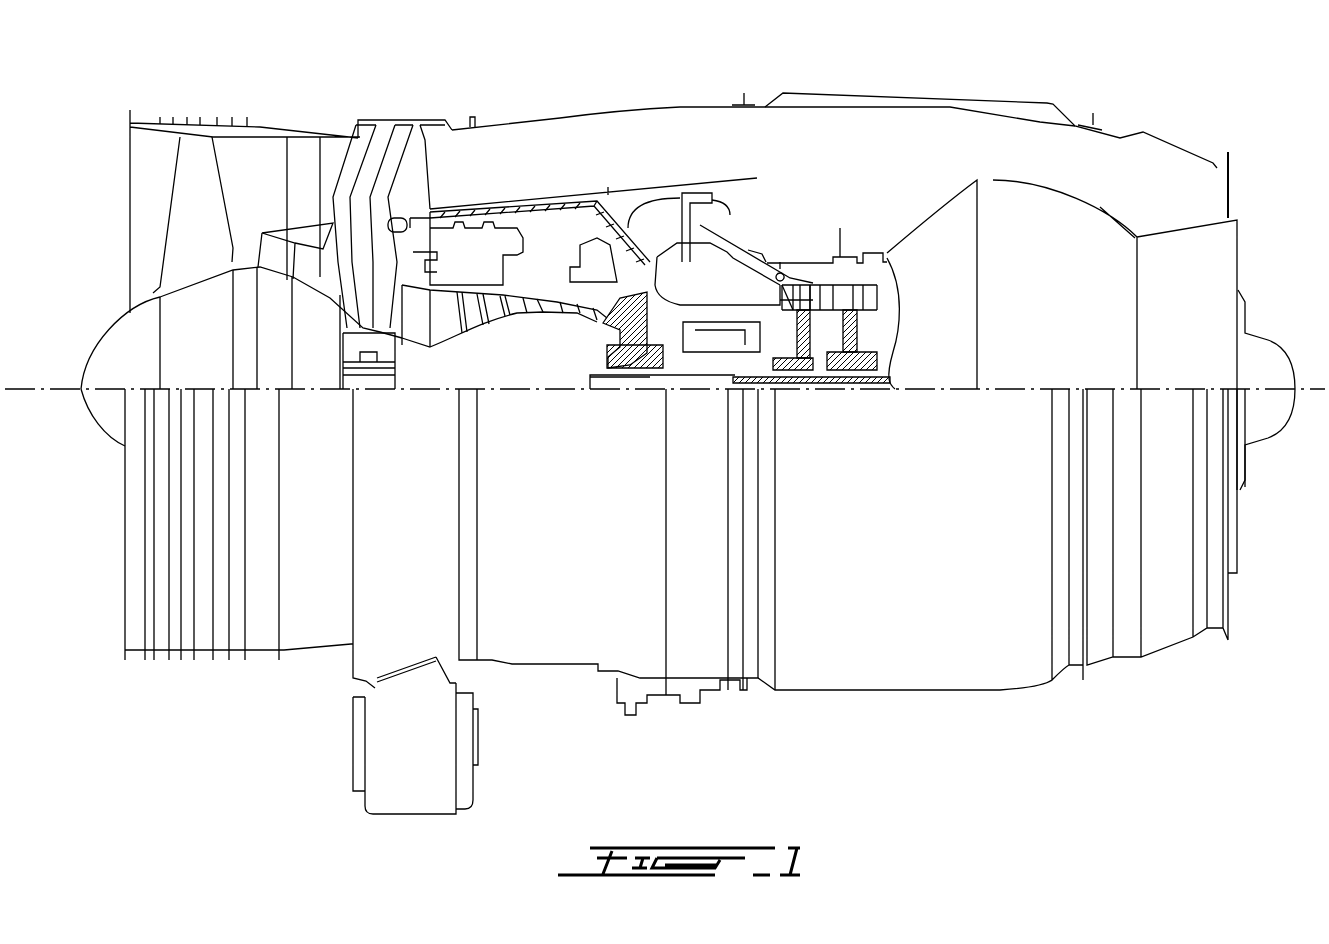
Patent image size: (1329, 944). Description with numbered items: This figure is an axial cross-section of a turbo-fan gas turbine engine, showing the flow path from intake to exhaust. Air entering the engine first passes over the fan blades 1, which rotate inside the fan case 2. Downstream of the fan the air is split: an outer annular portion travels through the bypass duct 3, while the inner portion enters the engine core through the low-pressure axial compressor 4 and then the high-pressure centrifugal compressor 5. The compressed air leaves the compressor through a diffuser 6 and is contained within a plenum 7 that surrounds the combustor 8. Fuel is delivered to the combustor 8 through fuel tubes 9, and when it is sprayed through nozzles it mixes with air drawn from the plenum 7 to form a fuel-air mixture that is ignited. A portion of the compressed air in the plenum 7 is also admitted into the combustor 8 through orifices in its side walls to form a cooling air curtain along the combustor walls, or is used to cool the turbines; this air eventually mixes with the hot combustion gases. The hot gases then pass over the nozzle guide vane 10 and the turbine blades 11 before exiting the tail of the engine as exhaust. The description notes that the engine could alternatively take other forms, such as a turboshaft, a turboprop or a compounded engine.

The fan blades 1 is at (189, 235).
The fan case 2 is at (262, 124).
The bypass duct 3 is at (527, 169).
The low-pressure axial compressor 4 is at (440, 328).
The high-pressure centrifugal compressor 5 is at (607, 318).
The diffuser 6 is at (662, 215).
The plenum 7 is at (733, 257).
The combustor 8 is at (703, 286).
The fuel tubes 9 is at (748, 250).
The nozzle guide vane 10 is at (797, 305).
The turbine blades 11 is at (808, 307).